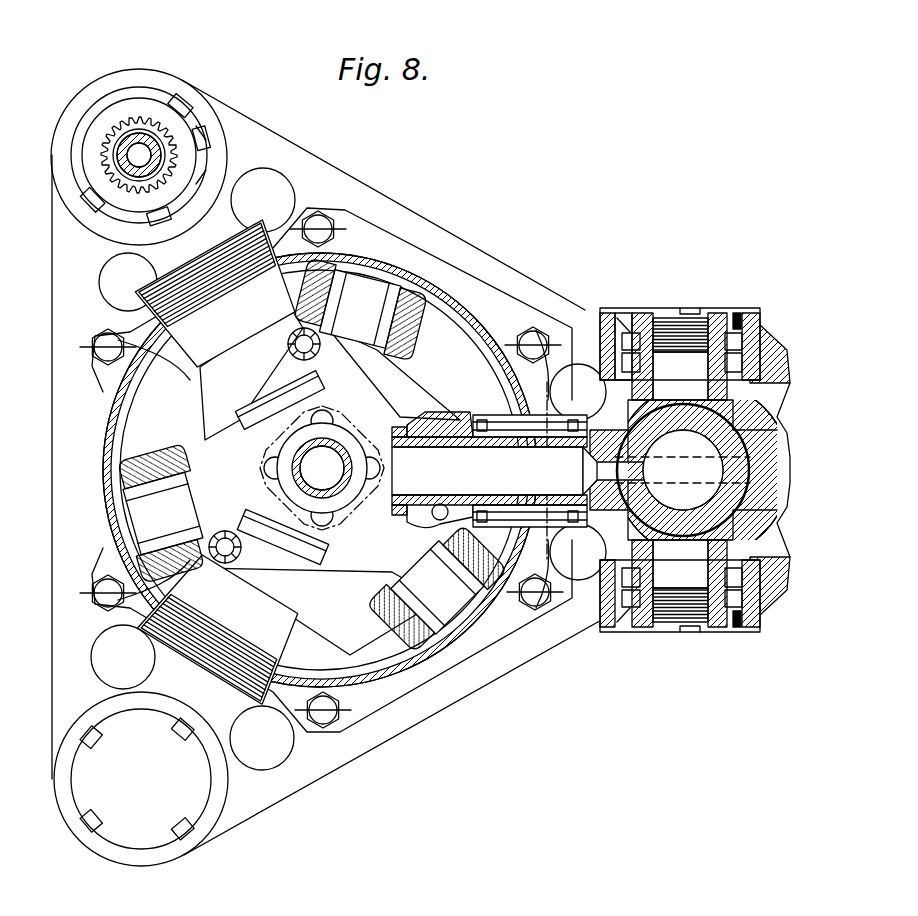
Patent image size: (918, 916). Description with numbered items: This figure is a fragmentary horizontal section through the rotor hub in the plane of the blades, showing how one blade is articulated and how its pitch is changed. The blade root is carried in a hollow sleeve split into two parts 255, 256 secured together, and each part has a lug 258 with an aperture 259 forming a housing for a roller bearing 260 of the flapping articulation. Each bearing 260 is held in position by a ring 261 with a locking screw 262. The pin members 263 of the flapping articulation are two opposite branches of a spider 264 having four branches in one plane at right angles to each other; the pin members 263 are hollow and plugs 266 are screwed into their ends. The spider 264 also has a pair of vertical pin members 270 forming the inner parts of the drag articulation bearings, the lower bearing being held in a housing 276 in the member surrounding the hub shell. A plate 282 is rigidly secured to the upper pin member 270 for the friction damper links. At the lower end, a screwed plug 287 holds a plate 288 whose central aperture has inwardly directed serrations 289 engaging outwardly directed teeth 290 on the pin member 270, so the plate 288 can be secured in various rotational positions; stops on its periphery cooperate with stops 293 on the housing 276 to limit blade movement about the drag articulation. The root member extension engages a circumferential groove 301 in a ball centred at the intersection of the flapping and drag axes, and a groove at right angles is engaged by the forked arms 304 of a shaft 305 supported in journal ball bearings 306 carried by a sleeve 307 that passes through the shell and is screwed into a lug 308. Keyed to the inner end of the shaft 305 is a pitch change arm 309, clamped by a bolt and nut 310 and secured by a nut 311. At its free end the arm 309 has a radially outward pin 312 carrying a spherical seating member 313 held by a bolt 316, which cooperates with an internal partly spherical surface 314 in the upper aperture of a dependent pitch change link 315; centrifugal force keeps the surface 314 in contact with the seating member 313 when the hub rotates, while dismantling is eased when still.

The sleeve part 255 is at (760, 462).
The sleeve part 256 is at (755, 480).
The lug 258 is at (778, 365).
The aperture 259 is at (740, 350).
The roller bearing 260 is at (750, 330).
The ring 261 is at (608, 313).
The locking screw 262 is at (735, 318).
The pin member 263 is at (635, 330).
The spider 264 is at (765, 548).
The plug 266 is at (692, 345).
The vertical pin member 270 is at (158, 135).
The housing 276 is at (87, 213).
The plate 282 is at (197, 177).
The screwed plug 287 is at (140, 153).
The plate 288 is at (118, 118).
The serrations 289 is at (147, 120).
The teeth 290 is at (142, 150).
The stops 293 is at (182, 193).
The circumferential groove 301 is at (730, 458).
The forked arms 304 is at (762, 428).
The shaft 305 is at (518, 471).
The journal ball bearings 306 is at (489, 471).
The sleeve 307 is at (488, 400).
The lug 308 is at (552, 400).
The pitch change arm 309 is at (420, 410).
The bolt and nut 310 is at (290, 355).
The nut 311 is at (392, 432).
The pin 312 is at (362, 292).
The spherical seating member 313 is at (400, 315).
The internal partly spherical surface 314 is at (412, 325).
The pitch change link 315 is at (398, 345).
The bolt 316 is at (350, 285).